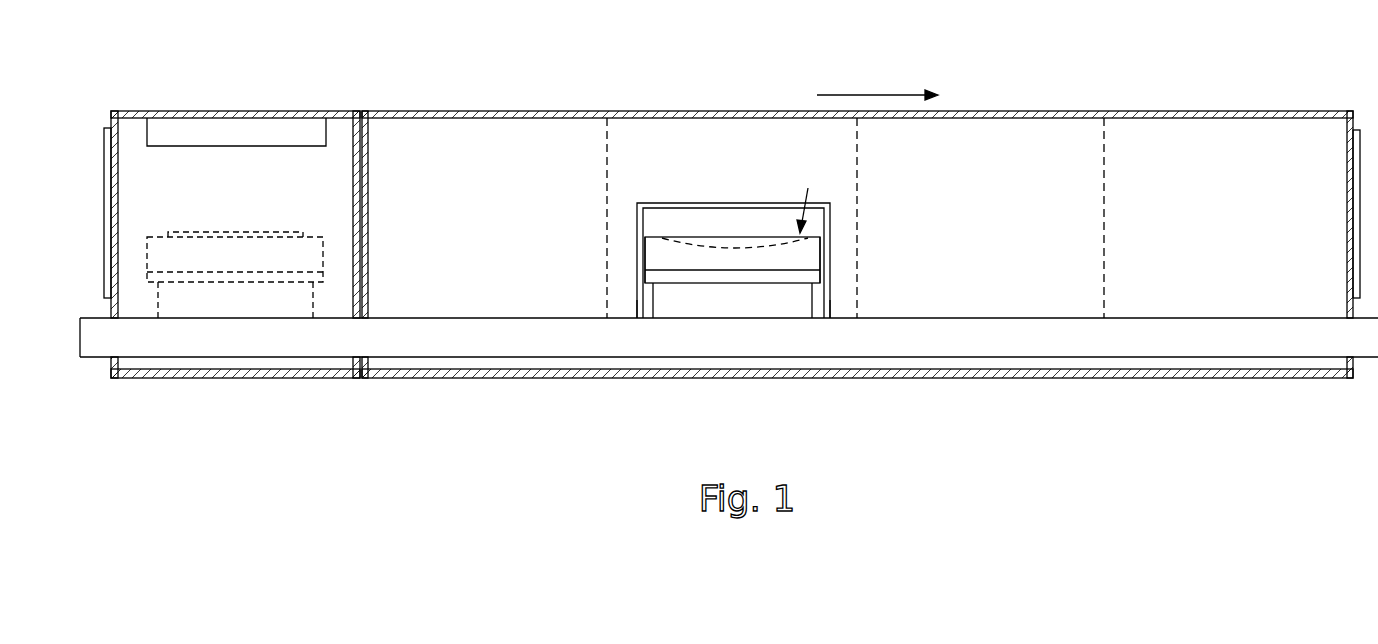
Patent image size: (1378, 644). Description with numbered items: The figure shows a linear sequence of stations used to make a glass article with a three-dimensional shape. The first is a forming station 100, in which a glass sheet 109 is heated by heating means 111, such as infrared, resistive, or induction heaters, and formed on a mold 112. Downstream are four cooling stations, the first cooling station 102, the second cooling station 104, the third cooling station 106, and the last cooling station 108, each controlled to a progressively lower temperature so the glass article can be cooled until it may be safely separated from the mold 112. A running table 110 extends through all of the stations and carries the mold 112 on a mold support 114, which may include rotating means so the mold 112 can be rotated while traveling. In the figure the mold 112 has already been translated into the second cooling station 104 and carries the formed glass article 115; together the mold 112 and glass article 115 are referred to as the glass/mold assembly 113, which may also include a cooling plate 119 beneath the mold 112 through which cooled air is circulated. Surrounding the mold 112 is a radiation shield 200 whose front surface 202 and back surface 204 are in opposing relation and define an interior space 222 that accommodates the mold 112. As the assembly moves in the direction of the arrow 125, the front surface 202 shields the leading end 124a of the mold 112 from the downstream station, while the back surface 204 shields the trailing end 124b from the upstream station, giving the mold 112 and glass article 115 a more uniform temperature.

The forming station 100 is at (238, 110).
The first cooling station 102 is at (488, 125).
The second cooling station 104 is at (740, 133).
The third cooling station 106 is at (990, 128).
The last cooling station 108 is at (1219, 127).
The glass sheet 109 is at (230, 230).
The running table 110 is at (481, 342).
The heating means 111 is at (190, 130).
The mold 112 is at (183, 253).
The glass/mold assembly 113 is at (808, 197).
The mold support 114 is at (730, 303).
The glass article 115 is at (737, 250).
The cooling plate 119 is at (687, 275).
The leading end 124a is at (822, 253).
The trailing end 124b is at (643, 256).
The arrow 125 is at (868, 92).
The radiation shield 200 is at (688, 205).
The front surface 202 is at (833, 295).
The back surface 204 is at (640, 295).
The interior space 222 is at (657, 215).